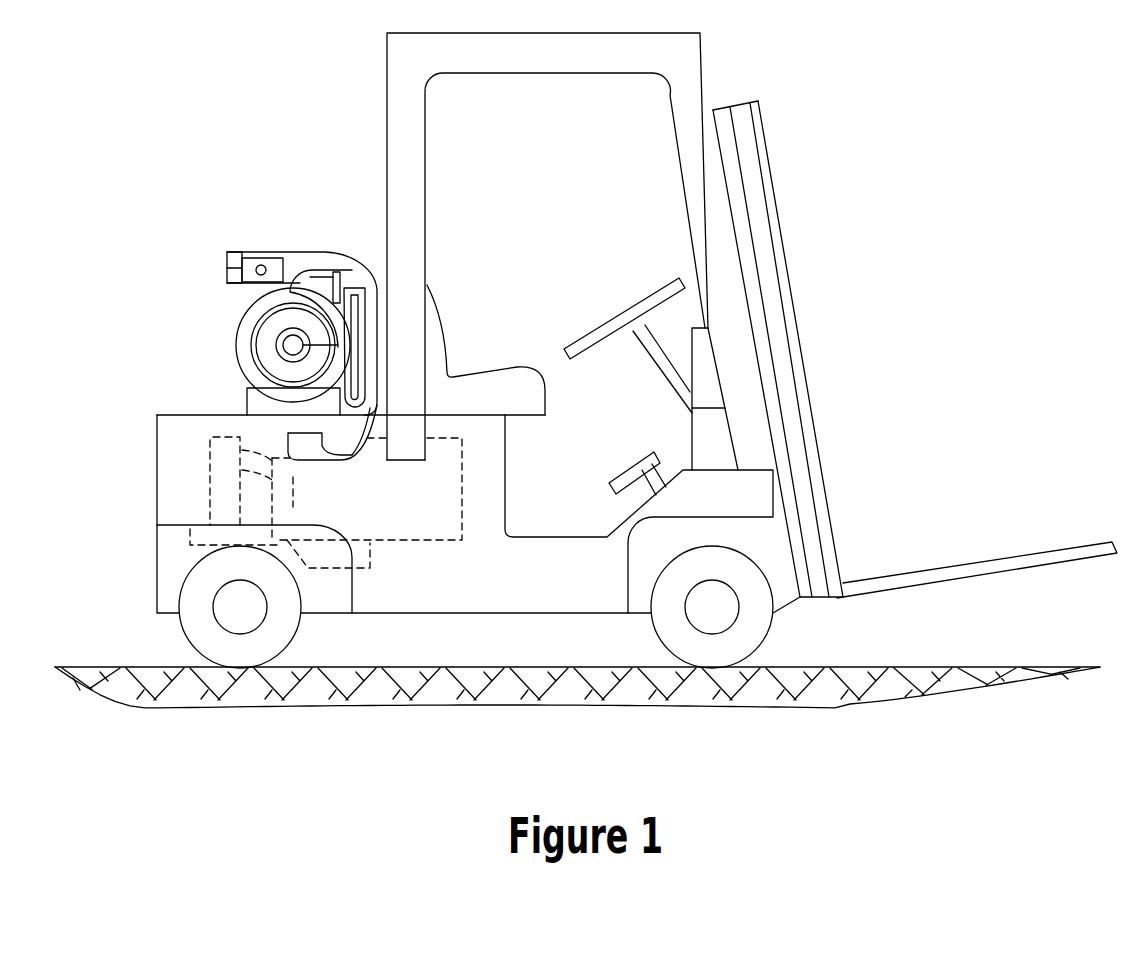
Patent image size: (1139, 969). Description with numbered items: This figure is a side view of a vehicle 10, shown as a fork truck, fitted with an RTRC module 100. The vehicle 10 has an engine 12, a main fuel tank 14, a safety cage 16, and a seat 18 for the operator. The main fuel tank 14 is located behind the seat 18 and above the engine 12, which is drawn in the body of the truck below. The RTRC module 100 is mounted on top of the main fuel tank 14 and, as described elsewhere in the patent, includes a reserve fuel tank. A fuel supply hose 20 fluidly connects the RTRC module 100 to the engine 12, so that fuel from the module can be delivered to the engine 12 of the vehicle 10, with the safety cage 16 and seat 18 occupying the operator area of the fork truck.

The vehicle 10 is at (808, 383).
The engine 12 is at (292, 489).
The main fuel tank 14 is at (237, 347).
The safety cage 16 is at (387, 78).
The seat 18 is at (517, 367).
The fuel supply hose 20 is at (381, 322).
The RTRC module 100 is at (225, 262).